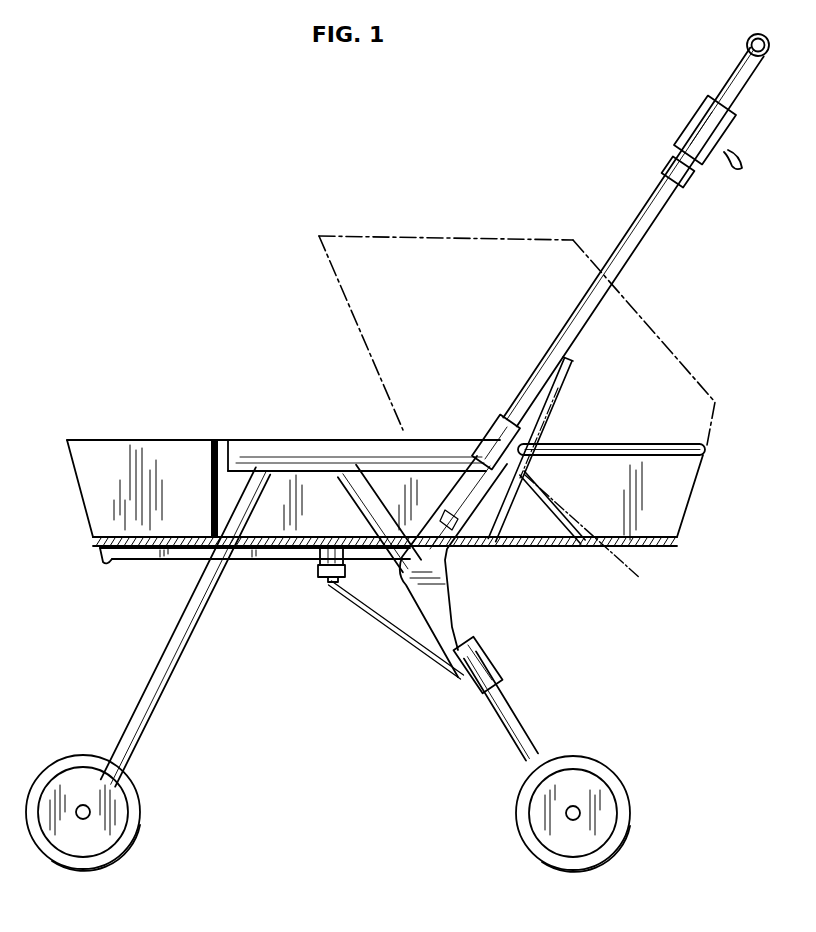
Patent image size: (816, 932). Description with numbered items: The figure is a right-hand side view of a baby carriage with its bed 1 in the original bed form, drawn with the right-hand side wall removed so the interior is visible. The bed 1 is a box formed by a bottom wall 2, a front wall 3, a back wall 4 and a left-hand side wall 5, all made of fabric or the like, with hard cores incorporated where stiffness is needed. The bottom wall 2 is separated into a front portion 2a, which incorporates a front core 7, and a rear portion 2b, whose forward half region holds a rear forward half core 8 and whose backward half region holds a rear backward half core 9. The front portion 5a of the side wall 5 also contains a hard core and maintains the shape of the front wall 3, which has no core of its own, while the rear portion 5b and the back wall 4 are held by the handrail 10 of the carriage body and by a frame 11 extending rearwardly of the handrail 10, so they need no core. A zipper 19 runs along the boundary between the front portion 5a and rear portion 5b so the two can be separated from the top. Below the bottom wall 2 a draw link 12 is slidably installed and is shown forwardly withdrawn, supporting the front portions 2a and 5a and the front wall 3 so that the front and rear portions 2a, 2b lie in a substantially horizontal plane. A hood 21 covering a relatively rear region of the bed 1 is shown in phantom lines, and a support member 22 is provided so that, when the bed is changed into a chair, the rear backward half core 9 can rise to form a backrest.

The baby carriage bed 1 is at (548, 552).
The bottom wall 2 is at (468, 552).
The front portion of the bottom wall 2a is at (156, 533).
The front core 7 is at (143, 505).
The rear portion of the bottom wall 2b is at (512, 542).
The front wall 3 is at (78, 495).
The back wall 4 is at (687, 508).
The left-hand side wall 5 is at (300, 502).
The front portion of the left-hand side wall 5a is at (107, 452).
The rear portion of the left-hand side wall 5b is at (425, 495).
The rear forward half core 8 is at (282, 540).
The rear backward half core 9 is at (640, 512).
The handrail 10 is at (357, 453).
The frame 11 is at (678, 447).
The draw link 12 is at (142, 552).
The zipper 19 is at (207, 460).
The hood 21 is at (487, 236).
The support member 22 is at (640, 578).